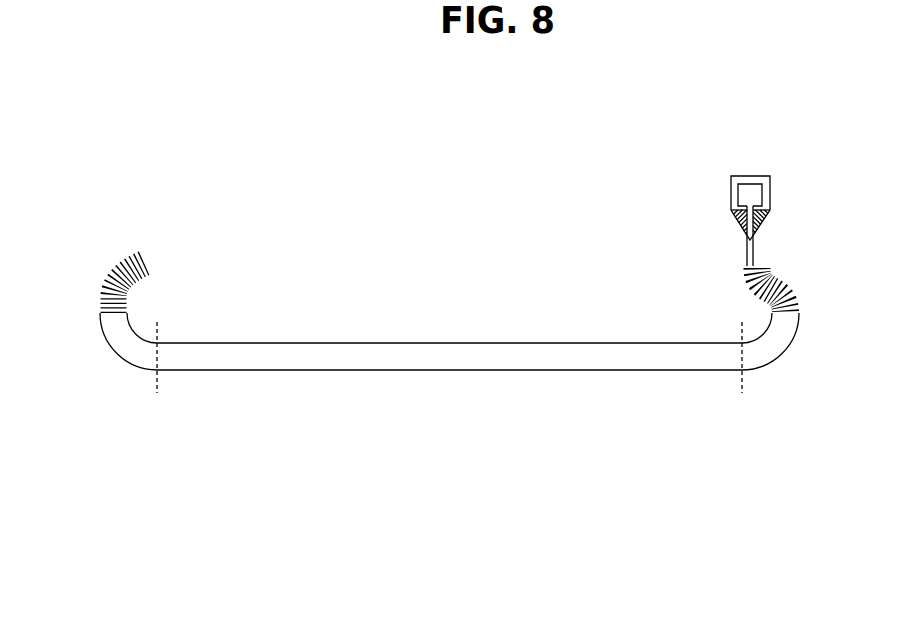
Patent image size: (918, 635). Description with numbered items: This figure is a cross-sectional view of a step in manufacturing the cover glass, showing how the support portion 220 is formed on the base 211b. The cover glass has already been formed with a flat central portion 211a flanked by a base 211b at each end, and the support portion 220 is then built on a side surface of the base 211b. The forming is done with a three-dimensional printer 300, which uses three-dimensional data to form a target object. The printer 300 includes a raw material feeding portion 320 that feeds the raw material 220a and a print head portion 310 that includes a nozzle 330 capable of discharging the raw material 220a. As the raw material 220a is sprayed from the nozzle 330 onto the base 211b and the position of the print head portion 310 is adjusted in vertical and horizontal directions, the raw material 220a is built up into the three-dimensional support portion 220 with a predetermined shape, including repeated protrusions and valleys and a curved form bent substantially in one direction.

The central portion 211a is at (452, 362).
The base 211b is at (129, 355).
The support portion 220 is at (103, 291).
The raw material 220a is at (737, 194).
The 3D printer 300 is at (739, 357).
The print head portion 310 is at (765, 222).
The raw material feeding portion 320 is at (770, 183).
The nozzle 330 is at (737, 222).